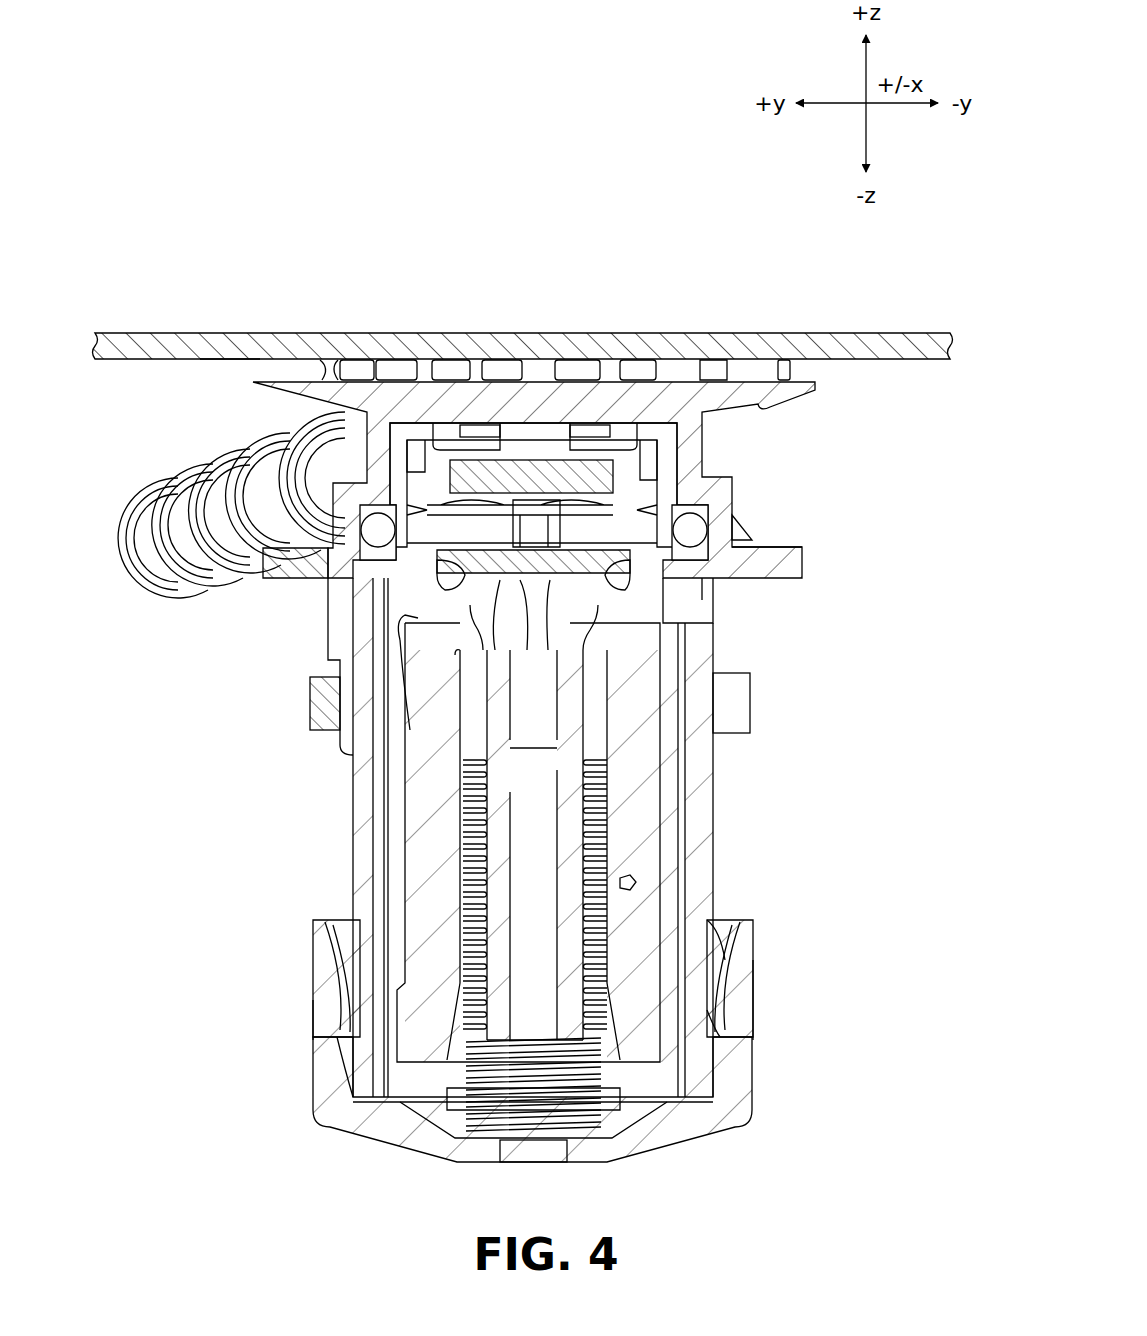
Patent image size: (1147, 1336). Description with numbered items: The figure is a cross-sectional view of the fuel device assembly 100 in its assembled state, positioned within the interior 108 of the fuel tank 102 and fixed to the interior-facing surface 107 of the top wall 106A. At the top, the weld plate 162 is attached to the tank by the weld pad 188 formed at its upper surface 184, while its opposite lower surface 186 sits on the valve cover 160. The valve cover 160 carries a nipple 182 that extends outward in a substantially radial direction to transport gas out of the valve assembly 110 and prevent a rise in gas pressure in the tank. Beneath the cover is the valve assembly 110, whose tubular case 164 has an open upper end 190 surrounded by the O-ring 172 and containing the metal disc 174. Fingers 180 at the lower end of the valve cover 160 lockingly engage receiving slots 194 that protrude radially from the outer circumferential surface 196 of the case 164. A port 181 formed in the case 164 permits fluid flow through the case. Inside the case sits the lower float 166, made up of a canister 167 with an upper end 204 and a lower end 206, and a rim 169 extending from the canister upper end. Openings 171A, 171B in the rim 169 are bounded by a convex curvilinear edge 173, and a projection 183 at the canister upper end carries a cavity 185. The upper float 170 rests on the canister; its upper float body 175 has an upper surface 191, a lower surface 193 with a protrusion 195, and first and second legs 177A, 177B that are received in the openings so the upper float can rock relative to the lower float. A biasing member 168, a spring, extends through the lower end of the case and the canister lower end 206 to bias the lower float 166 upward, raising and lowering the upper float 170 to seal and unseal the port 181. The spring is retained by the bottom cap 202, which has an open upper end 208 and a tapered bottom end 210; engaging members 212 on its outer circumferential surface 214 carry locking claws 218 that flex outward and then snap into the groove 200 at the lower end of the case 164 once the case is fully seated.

The fuel device assembly 100 is at (925, 522).
The fuel tank 102 is at (248, 326).
The top wall 106A is at (702, 330).
The interior-facing surface 107 is at (200, 359).
The interior 108 is at (152, 735).
The valve assembly 110 is at (785, 760).
The valve cover 160 is at (740, 462).
The weld plate 162 is at (300, 380).
The case 164 is at (325, 795).
The lower float 166 is at (645, 802).
The canister 167 is at (645, 885).
The biasing member 168 is at (595, 1080).
The rim 169 is at (443, 540).
The upper float 170 is at (437, 590).
The opening 171A is at (437, 602).
The opening 171B is at (630, 596).
The O-ring 172 is at (692, 530).
The curvilinear edge 173 is at (437, 578).
The metal disc 174 is at (522, 460).
The upper float body 175 is at (567, 555).
The first leg 177A is at (463, 605).
The second leg 177B is at (607, 610).
The fingers 180 is at (730, 615).
The port 181 is at (540, 530).
The nipple 182 is at (122, 557).
The projection 183 is at (490, 640).
The upper surface 184 is at (372, 375).
The cavity 185 is at (548, 578).
The lower surface 186 is at (770, 407).
The weld pad 188 is at (430, 375).
The upper end 190 is at (660, 452).
The upper surface 191 is at (700, 528).
The lower surface 193 is at (560, 750).
The receiving slots 194 is at (750, 695).
The protrusion 195 is at (508, 610).
The outer circumferential surface 196 is at (715, 850).
The groove 200 is at (705, 1018).
The bottom cap 202 is at (300, 1058).
The upper end 204 is at (400, 640).
The lower end 206 is at (650, 1062).
The open upper end 208 is at (740, 912).
The tapered bottom end 210 is at (415, 1150).
The engaging members 212 is at (770, 960).
The outer circumferential surface 214 is at (313, 1000).
The locking claw 218 is at (740, 1002).